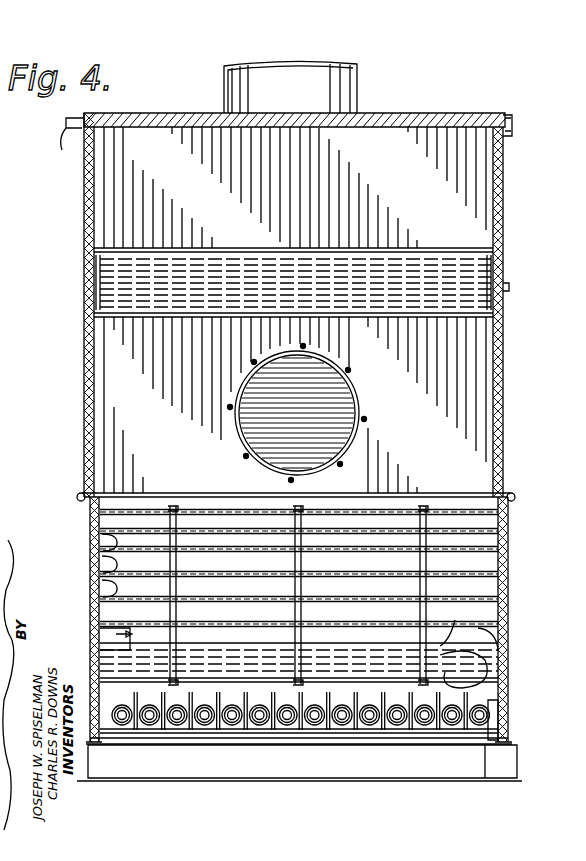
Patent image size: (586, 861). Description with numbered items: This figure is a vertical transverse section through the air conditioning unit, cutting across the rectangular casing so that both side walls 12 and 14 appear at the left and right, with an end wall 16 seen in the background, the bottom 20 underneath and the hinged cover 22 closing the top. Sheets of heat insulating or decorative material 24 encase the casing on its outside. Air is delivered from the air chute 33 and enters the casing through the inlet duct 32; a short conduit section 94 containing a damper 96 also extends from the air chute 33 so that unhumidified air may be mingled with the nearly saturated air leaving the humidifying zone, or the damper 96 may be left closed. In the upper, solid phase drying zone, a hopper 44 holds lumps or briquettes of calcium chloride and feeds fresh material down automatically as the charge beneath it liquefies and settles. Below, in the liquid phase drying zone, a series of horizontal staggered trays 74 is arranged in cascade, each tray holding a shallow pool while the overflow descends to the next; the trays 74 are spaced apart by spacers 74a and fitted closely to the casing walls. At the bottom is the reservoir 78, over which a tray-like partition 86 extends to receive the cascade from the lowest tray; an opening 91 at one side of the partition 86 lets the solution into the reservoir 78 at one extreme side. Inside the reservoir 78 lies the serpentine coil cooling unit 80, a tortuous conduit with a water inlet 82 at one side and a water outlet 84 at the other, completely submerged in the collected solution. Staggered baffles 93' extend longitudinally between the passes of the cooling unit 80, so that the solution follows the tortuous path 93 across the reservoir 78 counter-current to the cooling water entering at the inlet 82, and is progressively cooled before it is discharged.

The side wall 12 is at (94, 292).
The side wall 14 is at (506, 287).
The end wall 16 is at (142, 412).
The bottom 20 is at (352, 742).
The cover 22 is at (440, 113).
The heat insulating or decorative material 24 is at (84, 378).
The inlet duct 32 is at (98, 634).
The air chute 33 is at (352, 80).
The hopper 44 is at (125, 208).
The trays 74 is at (92, 585).
The spacers 74a is at (275, 627).
The reservoir 78 is at (342, 698).
The serpentine coil cooling unit 80 is at (494, 720).
The water inlet 82 is at (122, 724).
The water outlet 84 is at (492, 712).
The partition 86 is at (487, 630).
The opening 91 is at (497, 683).
The tortuous path 93 is at (495, 596).
The staggered baffles 93' is at (300, 732).
The short conduit section 94 is at (248, 446).
The damper 96 is at (333, 401).